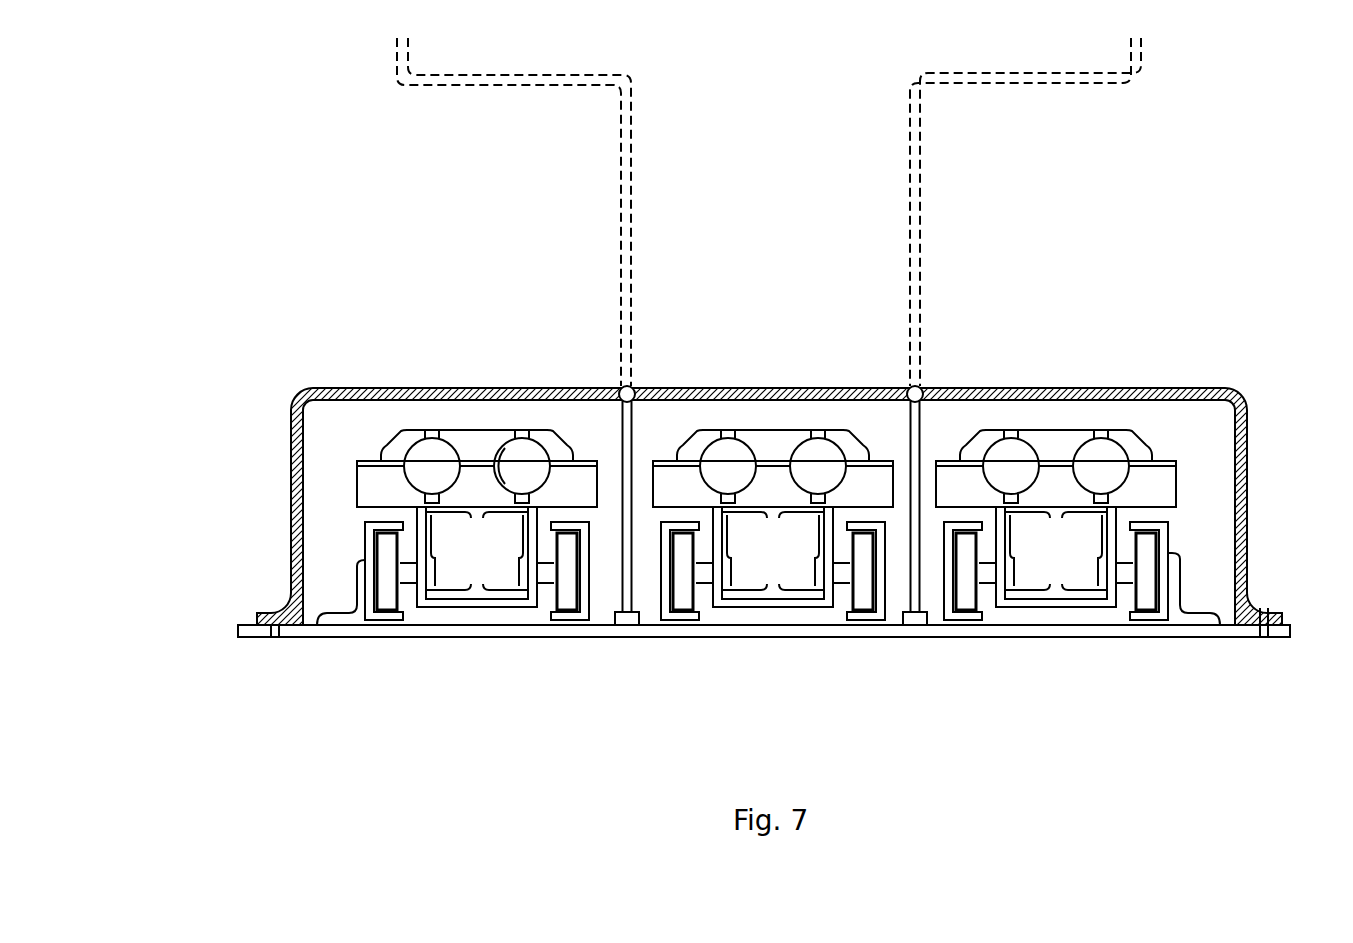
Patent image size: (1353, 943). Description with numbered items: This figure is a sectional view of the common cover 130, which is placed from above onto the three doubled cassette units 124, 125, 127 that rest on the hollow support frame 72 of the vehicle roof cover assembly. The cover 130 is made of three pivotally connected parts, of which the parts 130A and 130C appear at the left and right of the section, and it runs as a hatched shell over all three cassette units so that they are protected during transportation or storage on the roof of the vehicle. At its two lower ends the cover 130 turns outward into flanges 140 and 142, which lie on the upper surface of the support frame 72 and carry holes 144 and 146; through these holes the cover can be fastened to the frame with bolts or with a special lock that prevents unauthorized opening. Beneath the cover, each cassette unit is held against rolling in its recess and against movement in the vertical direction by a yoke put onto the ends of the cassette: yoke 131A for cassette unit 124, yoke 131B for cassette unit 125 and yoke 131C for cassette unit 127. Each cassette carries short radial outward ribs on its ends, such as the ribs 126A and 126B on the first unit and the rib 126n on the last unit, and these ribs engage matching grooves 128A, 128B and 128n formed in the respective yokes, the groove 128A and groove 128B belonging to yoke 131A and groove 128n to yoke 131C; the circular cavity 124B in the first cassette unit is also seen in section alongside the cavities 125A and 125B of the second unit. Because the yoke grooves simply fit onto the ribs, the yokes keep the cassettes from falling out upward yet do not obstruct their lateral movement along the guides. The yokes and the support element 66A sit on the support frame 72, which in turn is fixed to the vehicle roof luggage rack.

The support bracket 66A is at (1188, 623).
The support frame 72 is at (903, 637).
The cassette unit 124 is at (528, 486).
The second contact cavity of first module 124B is at (530, 468).
The cassette unit 125 is at (773, 376).
The first contact of second module 125A is at (728, 475).
The second contact of second module 125B is at (816, 475).
The rib 126A is at (437, 437).
The rib 126B is at (518, 430).
The rib 126n is at (1100, 497).
The cassette unit 127 is at (1096, 483).
The groove 128A is at (433, 503).
The groove 128B is at (523, 504).
The groove 128n is at (1098, 503).
The common cover 130 is at (775, 439).
The cover part 130A is at (492, 390).
The cover part 130C is at (1105, 405).
The yoke 131A is at (347, 478).
The yoke 131B is at (773, 512).
The yoke 131C is at (1048, 512).
The flange 140 is at (258, 592).
The flange 142 is at (1262, 560).
The hole 144 is at (277, 643).
The hole 146 is at (1262, 637).